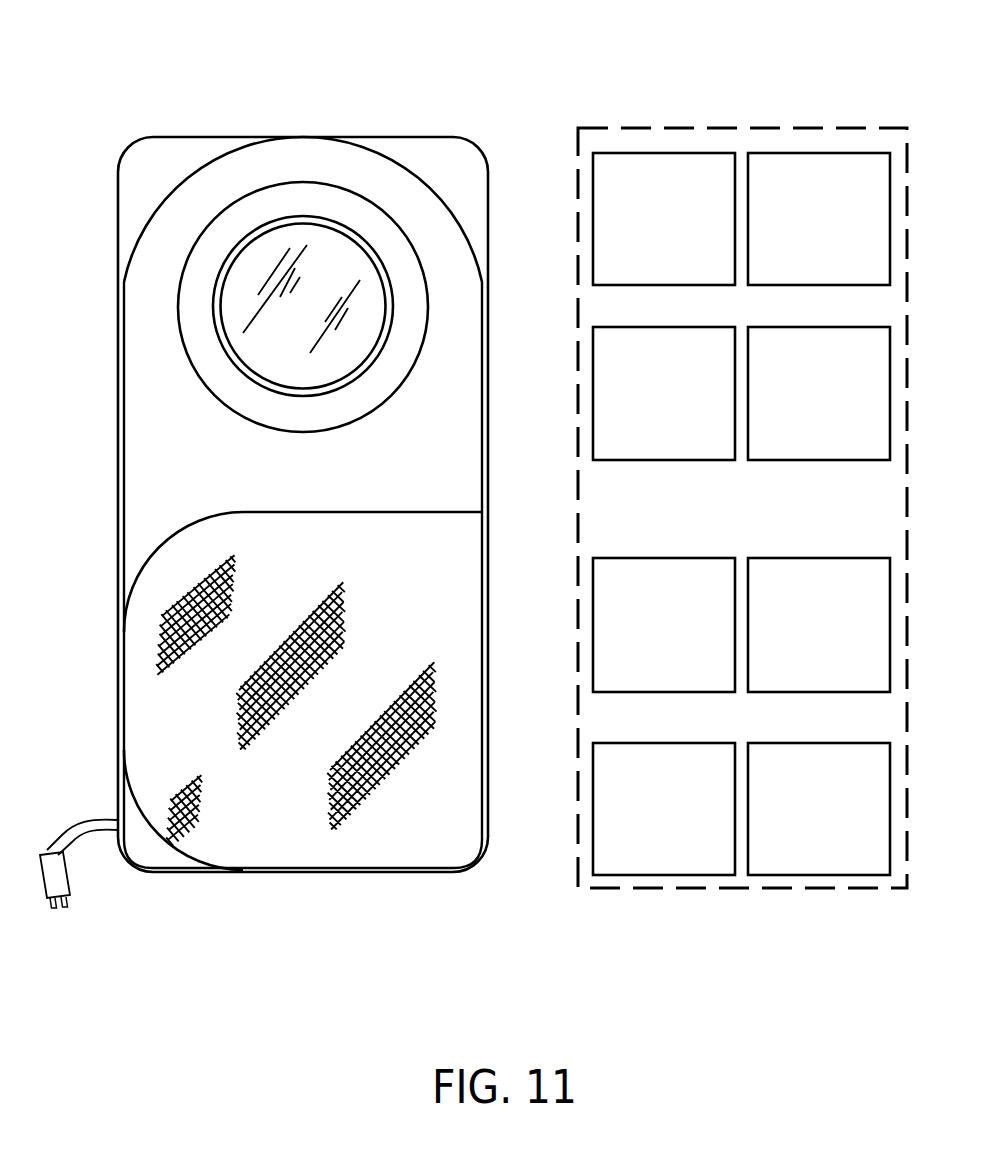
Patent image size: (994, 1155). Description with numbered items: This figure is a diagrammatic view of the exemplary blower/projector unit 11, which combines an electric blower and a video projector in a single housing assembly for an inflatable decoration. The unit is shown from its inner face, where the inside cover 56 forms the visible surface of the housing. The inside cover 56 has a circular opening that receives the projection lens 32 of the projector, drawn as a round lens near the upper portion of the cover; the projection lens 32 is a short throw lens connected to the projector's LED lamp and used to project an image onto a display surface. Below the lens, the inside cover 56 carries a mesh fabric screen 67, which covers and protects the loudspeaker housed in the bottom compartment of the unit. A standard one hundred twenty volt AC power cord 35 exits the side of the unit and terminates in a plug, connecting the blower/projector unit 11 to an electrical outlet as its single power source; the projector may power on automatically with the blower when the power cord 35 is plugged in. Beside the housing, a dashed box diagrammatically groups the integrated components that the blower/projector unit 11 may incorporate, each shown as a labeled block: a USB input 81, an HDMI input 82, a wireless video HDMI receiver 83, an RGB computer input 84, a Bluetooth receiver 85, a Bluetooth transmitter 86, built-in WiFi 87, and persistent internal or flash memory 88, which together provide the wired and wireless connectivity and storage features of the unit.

The blower/projector unit 11 is at (112, 126).
The inside cover 56 is at (137, 470).
The projection lens 32 is at (348, 377).
The mesh fabric screen 67 is at (434, 590).
The power cord 35 is at (77, 818).
The USB input 81 is at (677, 230).
The HDMI input 82 is at (831, 230).
The wireless video HDMI receiver 83 is at (677, 404).
The RGB computer input 84 is at (831, 404).
The Bluetooth receiver 85 is at (677, 637).
The Bluetooth transmitter 86 is at (831, 637).
The built-in WiFi 87 is at (677, 820).
The persistent internal or flash memory 88 is at (831, 820).